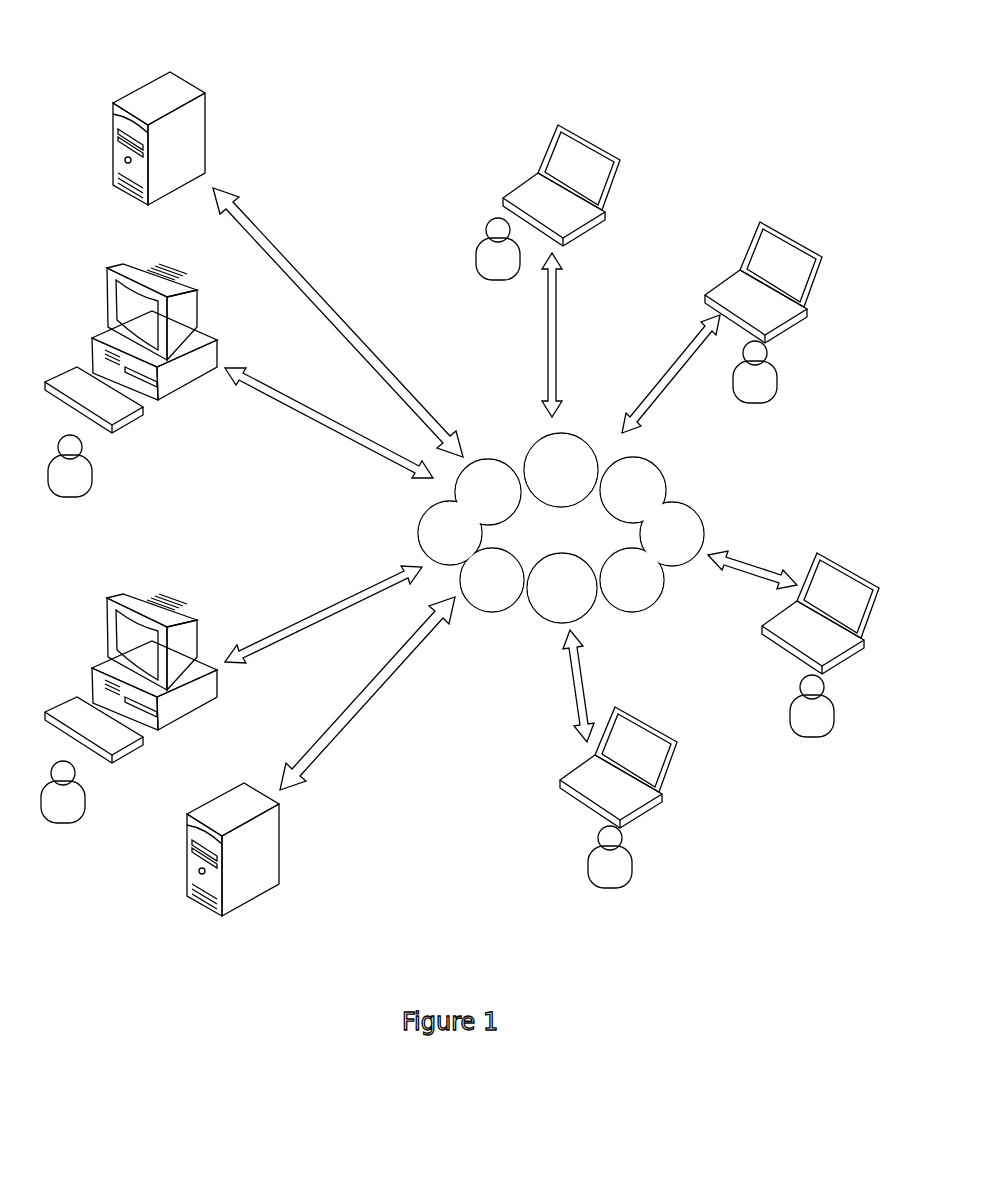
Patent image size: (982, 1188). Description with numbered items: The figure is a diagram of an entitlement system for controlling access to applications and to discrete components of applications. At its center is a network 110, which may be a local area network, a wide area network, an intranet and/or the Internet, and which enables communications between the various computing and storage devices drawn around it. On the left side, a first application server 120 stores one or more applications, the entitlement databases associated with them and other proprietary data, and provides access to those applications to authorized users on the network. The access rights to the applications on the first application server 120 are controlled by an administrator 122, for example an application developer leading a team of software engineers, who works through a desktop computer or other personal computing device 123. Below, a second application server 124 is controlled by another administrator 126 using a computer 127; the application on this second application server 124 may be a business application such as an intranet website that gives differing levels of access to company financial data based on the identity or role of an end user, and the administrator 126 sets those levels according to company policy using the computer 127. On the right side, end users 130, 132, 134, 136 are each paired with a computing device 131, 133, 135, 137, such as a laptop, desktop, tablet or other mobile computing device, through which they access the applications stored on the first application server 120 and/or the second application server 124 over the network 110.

The network 110 is at (561, 528).
The first application server 120 is at (195, 82).
The administrator 122 is at (93, 477).
The personal computing device 123 is at (177, 392).
The second application server 124 is at (260, 898).
The administrator 126 is at (87, 807).
The computer 127 is at (218, 690).
The end user 130 is at (473, 263).
The computing device 131 is at (523, 182).
The end user 132 is at (733, 388).
The computing device 133 is at (728, 278).
The end user 134 is at (787, 720).
The computing device 135 is at (787, 612).
The end user 136 is at (583, 873).
The computing device 137 is at (582, 762).